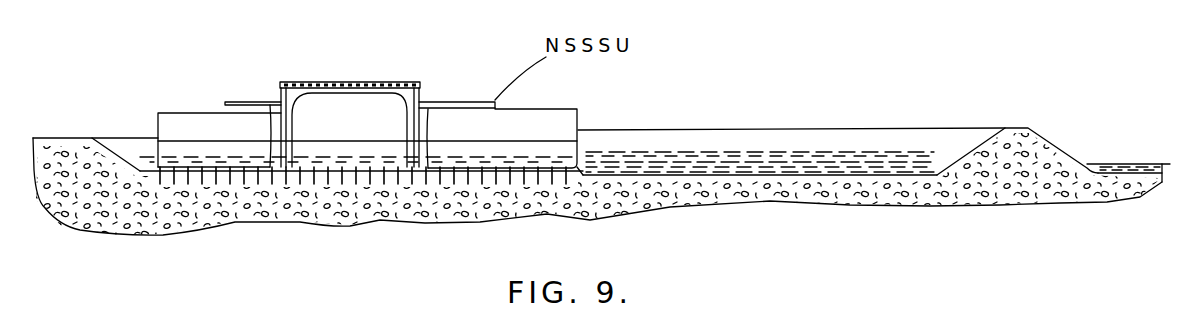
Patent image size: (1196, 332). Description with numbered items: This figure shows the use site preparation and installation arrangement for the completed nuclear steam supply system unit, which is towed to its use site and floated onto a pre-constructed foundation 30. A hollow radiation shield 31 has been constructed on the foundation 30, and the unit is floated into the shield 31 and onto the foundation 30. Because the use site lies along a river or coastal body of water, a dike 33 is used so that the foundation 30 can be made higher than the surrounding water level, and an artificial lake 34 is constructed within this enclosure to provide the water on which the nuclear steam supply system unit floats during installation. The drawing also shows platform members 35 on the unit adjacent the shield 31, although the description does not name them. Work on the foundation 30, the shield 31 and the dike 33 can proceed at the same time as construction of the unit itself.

The foundation 30 is at (210, 177).
The hollow radiation shield 31 is at (368, 80).
The dike 33 is at (1050, 152).
The artificial lake 34 is at (832, 155).
The pontoon platform 35 is at (281, 100).